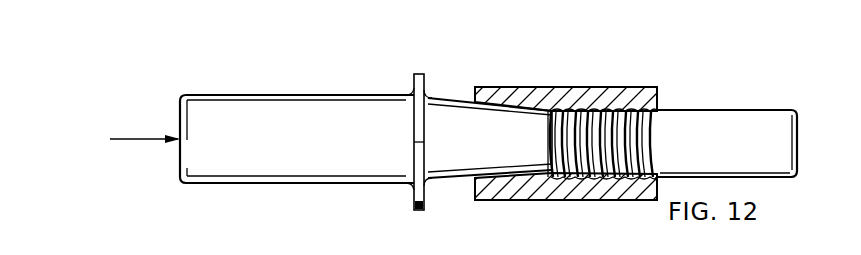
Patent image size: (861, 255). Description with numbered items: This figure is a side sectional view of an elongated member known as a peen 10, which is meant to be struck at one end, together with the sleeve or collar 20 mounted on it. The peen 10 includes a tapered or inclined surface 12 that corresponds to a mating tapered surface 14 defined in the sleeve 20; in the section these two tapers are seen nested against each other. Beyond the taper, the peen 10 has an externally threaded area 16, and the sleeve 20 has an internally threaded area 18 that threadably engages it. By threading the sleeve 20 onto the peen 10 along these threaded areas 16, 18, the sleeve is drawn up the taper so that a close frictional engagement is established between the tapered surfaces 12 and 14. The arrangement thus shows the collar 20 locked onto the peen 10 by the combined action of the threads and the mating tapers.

The peen 10 is at (466, 82).
The tapered or inclined surface 12 is at (326, 154).
The mating tapered surface 14 is at (506, 180).
The externally threaded area 16 is at (601, 172).
The internally threaded area 18 is at (603, 175).
The sleeve or collar 20 is at (650, 70).